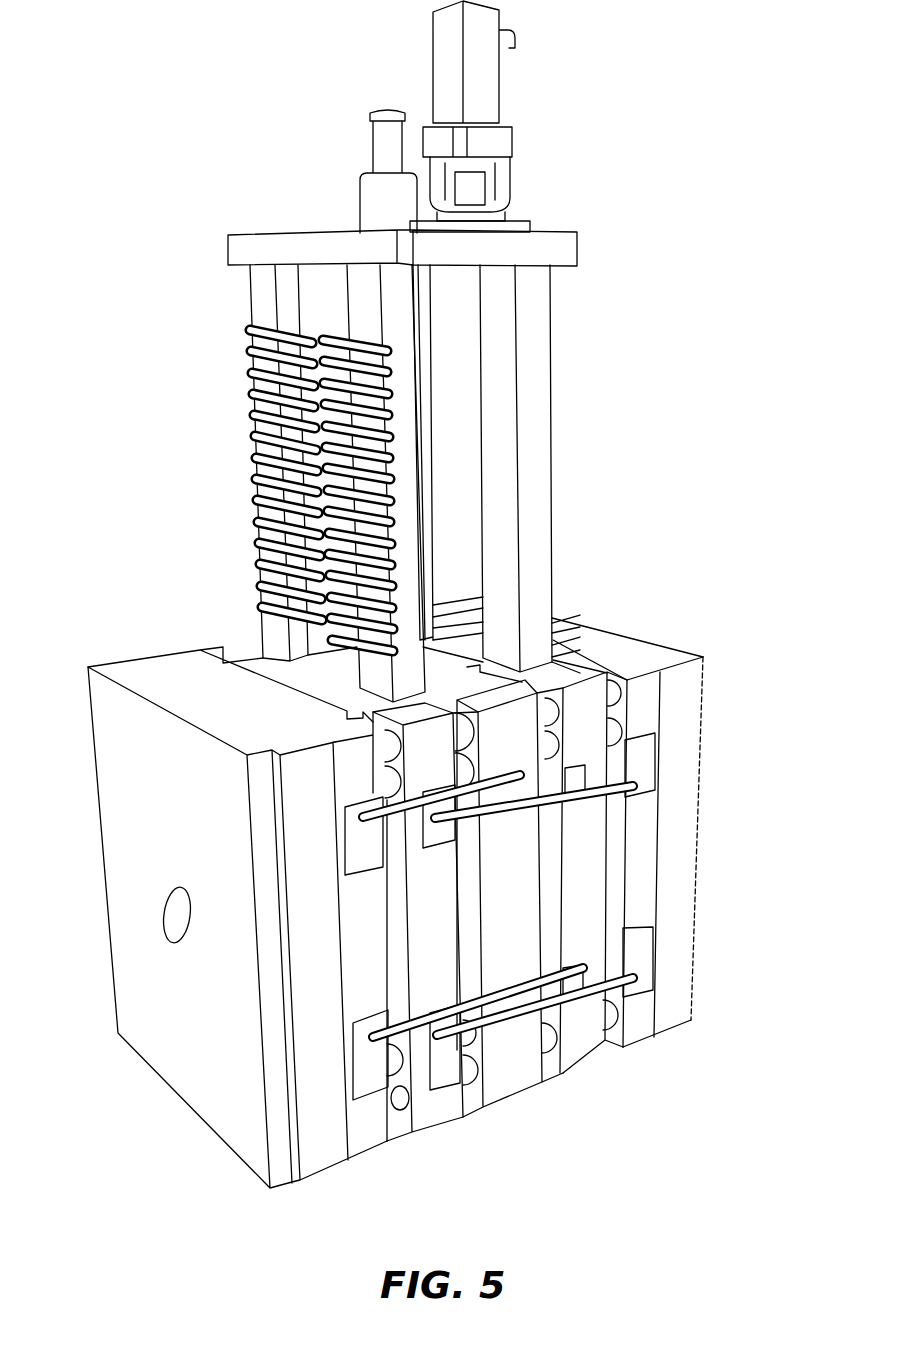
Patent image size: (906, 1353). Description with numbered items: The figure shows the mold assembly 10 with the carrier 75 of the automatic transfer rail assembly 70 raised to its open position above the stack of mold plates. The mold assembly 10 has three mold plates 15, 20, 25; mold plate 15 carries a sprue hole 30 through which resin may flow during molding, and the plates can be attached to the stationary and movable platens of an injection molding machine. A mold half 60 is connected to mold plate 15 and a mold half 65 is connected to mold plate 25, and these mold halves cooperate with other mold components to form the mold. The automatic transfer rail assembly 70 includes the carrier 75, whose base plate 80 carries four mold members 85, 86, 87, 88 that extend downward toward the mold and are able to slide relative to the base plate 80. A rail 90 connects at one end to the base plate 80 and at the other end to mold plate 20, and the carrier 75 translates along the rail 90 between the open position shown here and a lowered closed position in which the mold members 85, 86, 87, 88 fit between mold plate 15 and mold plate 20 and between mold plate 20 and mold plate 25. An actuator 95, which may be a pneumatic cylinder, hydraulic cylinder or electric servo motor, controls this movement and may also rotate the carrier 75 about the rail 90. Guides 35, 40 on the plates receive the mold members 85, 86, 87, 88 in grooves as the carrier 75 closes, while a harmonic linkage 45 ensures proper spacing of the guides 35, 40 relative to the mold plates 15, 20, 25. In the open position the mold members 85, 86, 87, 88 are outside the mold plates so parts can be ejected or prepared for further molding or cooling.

The mold assembly 10 is at (680, 200).
The mold plate 15 is at (330, 1177).
The mold plate 20 is at (512, 1097).
The mold plate 25 is at (690, 1032).
The sprue hole 30 is at (178, 912).
The guide 35 is at (450, 1138).
The guide 40 is at (585, 1072).
The harmonic linkage 45 is at (505, 960).
The mold half 60 is at (375, 1157).
The mold half 65 is at (640, 1045).
The automatic transfer rail assembly 70 is at (308, 66).
The carrier 75 is at (261, 186).
The base plate 80 is at (516, 221).
The mold member 85 is at (248, 298).
The mold member 86 is at (345, 327).
The mold member 87 is at (433, 318).
The mold member 88 is at (550, 380).
The rail 90 is at (360, 215).
The actuator 95 is at (500, 88).